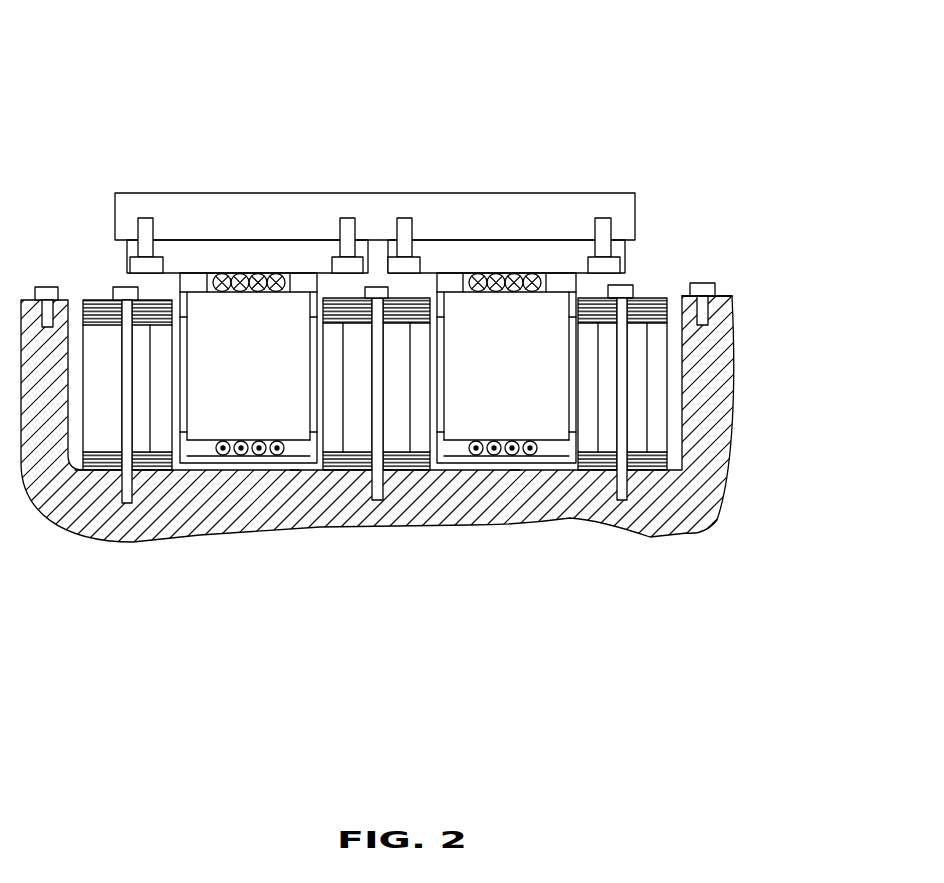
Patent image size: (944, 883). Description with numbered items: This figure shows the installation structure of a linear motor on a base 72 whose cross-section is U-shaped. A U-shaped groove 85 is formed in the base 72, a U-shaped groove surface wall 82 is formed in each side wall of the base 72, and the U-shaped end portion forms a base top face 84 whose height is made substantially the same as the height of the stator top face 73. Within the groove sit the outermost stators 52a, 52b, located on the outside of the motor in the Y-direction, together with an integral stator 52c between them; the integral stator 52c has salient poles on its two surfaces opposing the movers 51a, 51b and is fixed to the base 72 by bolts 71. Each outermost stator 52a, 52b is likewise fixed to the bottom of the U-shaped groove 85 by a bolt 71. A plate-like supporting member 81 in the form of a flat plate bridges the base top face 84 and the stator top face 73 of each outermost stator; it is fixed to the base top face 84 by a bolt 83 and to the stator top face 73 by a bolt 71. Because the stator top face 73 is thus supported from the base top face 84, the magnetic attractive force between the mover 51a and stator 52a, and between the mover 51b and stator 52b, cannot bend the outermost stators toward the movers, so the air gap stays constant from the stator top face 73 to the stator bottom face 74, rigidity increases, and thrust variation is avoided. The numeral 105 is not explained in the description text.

The movable plate 105 is at (457, 213).
The mover 51a is at (548, 236).
The mover 51b is at (251, 236).
The outermost stator 52a is at (680, 351).
The outermost stator 52b is at (102, 353).
The integral stator 52c is at (397, 442).
The bolt 71 is at (377, 287).
The base 72 is at (670, 512).
The stator top face 73 is at (585, 292).
The stator bottom face 74 is at (589, 478).
The plate-like supporting member 81 is at (677, 296).
The U-shaped groove surface wall 82 is at (707, 465).
The bolt 83 is at (704, 282).
The base top face 84 is at (723, 292).
The U-shaped groove 85 is at (75, 458).